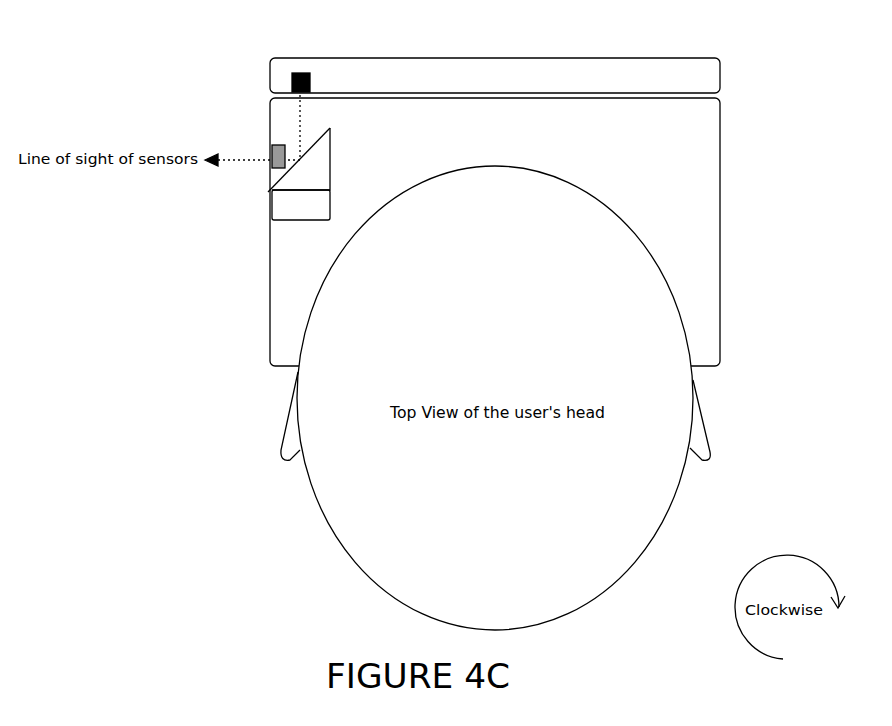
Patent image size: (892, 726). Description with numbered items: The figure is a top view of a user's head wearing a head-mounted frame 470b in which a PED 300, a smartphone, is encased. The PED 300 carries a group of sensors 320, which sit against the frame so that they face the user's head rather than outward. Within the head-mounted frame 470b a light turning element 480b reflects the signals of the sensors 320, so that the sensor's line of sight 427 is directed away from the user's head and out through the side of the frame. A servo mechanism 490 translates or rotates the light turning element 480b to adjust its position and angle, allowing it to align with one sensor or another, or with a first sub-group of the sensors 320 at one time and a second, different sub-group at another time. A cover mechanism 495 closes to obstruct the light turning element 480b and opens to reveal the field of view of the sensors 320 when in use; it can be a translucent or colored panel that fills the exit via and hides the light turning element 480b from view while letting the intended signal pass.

The PED 300 is at (718, 87).
The sensors 320 is at (301, 72).
The head-mounted frame 470b is at (718, 206).
The sensor's line of sight 427 is at (245, 158).
The light turning element 480b is at (312, 147).
The cover mechanism 495 is at (272, 176).
The servo mechanism 490 is at (318, 217).